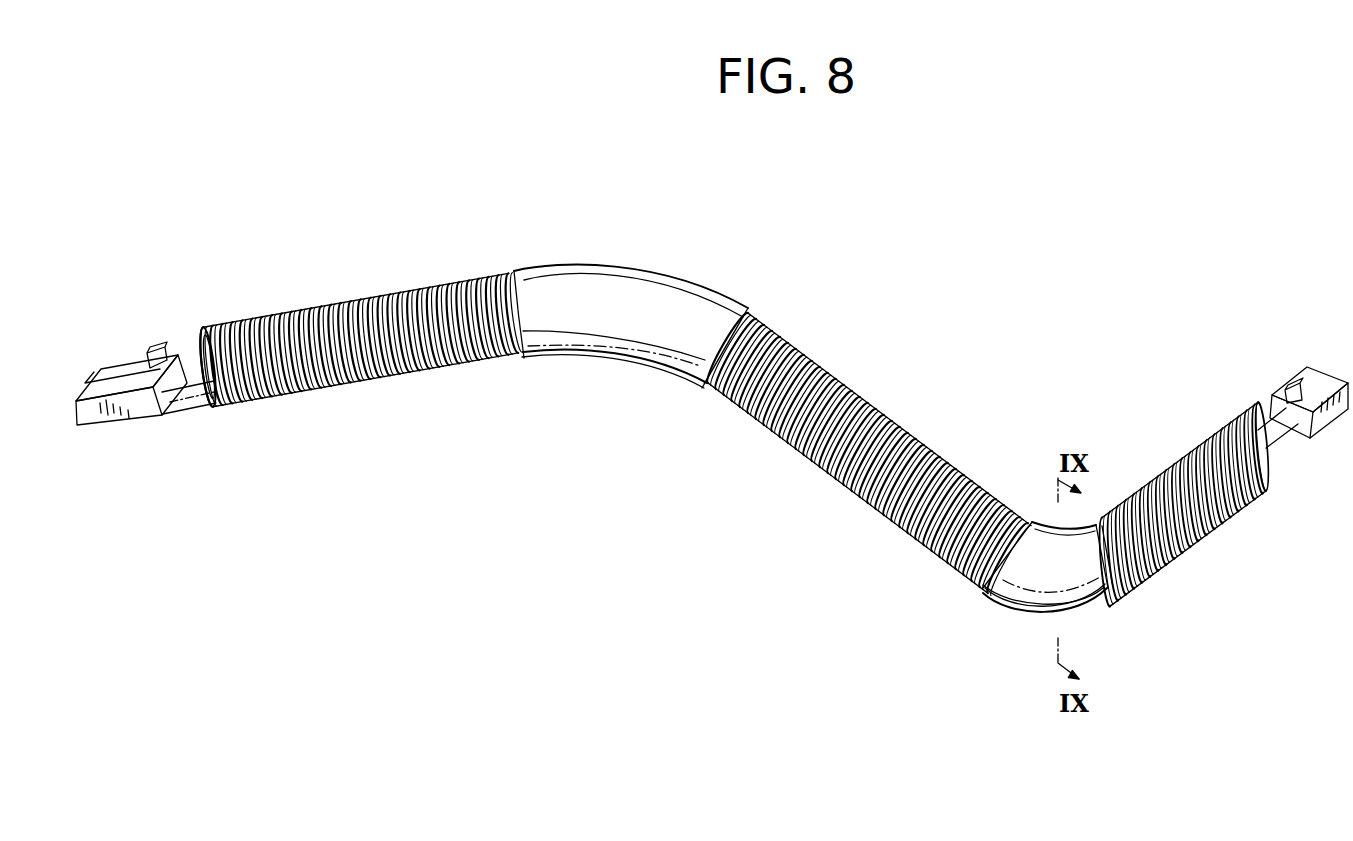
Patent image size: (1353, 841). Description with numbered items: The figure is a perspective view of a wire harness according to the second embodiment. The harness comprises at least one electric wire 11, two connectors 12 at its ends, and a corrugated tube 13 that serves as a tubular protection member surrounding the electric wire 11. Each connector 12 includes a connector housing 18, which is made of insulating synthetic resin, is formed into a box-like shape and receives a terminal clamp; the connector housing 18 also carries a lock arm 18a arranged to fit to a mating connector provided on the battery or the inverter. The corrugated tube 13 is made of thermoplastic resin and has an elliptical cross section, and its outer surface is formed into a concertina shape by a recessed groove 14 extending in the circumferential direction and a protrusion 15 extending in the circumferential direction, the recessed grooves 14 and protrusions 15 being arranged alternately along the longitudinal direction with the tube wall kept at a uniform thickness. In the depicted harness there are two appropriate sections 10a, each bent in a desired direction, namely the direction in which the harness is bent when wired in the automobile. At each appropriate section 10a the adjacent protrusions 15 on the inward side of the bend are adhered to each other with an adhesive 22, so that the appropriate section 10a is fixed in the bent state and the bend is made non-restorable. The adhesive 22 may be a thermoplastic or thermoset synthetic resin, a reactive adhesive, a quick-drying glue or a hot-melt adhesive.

The appropriate section 10a is at (606, 356).
The electric wire 11 is at (198, 370).
The connector 12 is at (97, 428).
The corrugated tube 13 is at (428, 385).
The recessed groove 14 is at (362, 388).
The protrusion 15 is at (296, 303).
The connector housing 18 is at (117, 420).
The lock arm 18a is at (117, 370).
The adhesive 22 is at (663, 300).